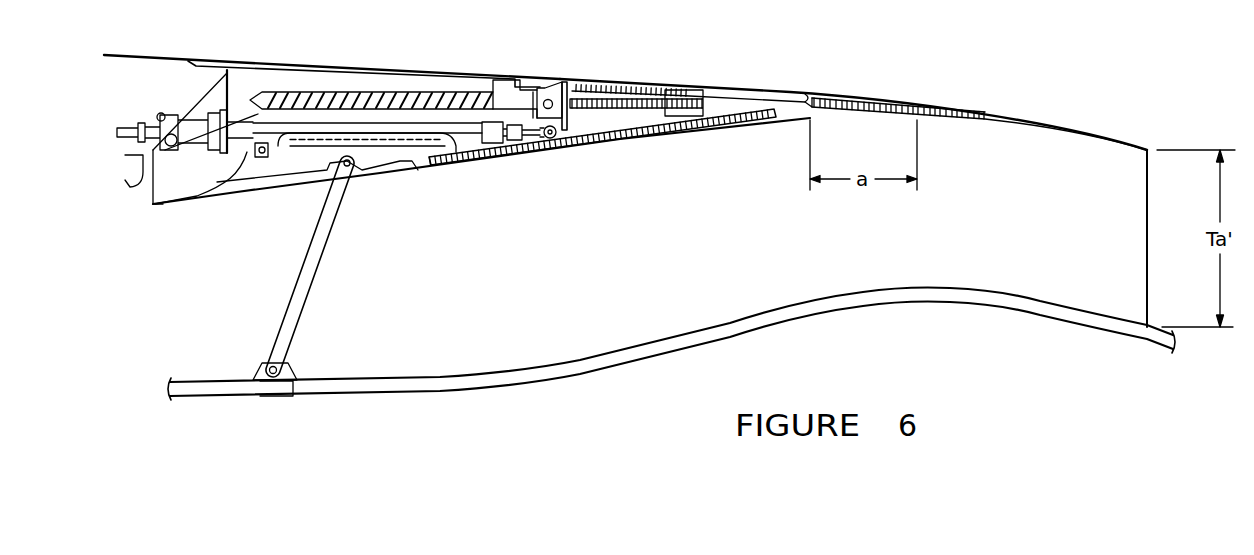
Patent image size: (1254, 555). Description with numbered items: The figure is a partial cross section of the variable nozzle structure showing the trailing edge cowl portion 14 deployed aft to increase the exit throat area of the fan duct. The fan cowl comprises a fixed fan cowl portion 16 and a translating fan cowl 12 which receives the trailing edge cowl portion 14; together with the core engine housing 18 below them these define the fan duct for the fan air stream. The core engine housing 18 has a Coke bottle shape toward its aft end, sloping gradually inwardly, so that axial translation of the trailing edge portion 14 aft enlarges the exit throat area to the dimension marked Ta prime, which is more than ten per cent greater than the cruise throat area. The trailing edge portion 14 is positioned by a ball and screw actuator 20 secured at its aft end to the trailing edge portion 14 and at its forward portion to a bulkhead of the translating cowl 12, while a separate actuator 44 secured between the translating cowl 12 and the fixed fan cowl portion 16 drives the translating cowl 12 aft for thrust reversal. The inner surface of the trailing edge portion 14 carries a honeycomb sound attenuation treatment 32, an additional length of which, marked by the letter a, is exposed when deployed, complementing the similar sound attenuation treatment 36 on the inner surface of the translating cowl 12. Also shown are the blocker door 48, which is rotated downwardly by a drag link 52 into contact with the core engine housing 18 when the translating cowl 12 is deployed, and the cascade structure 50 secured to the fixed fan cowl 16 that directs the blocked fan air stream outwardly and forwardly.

The translating fan cowl 12 is at (337, 67).
The trailing edge cowl portion 14 is at (843, 94).
The fixed fan cowl portion 16 is at (138, 55).
The core engine housing 18 is at (582, 360).
The ball and screw actuator 20 is at (638, 104).
The sound attenuation treatment 32 is at (890, 113).
The sound attenuation treatment 36 is at (656, 133).
The actuator 44 is at (467, 135).
The blocker door 48 is at (380, 174).
The cascade structure 50 is at (448, 100).
The drag link 52 is at (302, 265).